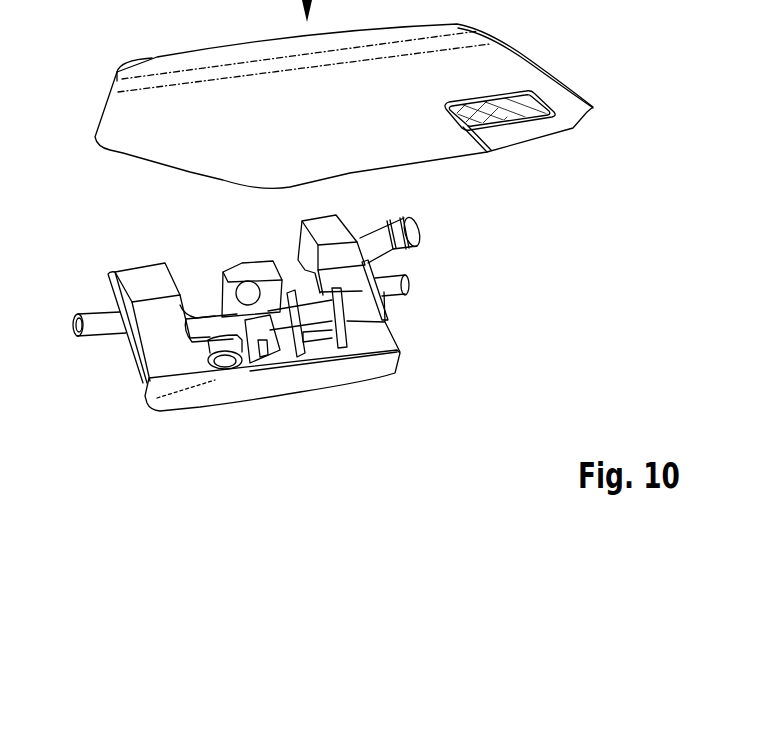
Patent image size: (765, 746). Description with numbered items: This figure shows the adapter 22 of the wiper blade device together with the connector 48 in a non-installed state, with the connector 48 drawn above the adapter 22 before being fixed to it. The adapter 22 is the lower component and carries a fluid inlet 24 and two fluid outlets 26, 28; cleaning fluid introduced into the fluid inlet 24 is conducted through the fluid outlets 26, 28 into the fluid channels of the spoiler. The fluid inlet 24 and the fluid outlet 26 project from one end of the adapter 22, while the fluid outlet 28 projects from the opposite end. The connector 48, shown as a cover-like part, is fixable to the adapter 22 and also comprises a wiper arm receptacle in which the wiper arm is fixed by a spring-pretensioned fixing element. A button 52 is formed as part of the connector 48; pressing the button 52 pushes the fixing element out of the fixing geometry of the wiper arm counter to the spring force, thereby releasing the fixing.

The adapter 22 is at (233, 388).
The fluid inlet 24 is at (405, 233).
The fluid outlet 26 is at (405, 289).
The fluid outlet 28 is at (92, 322).
The connector 48 is at (184, 97).
The button 52 is at (507, 115).